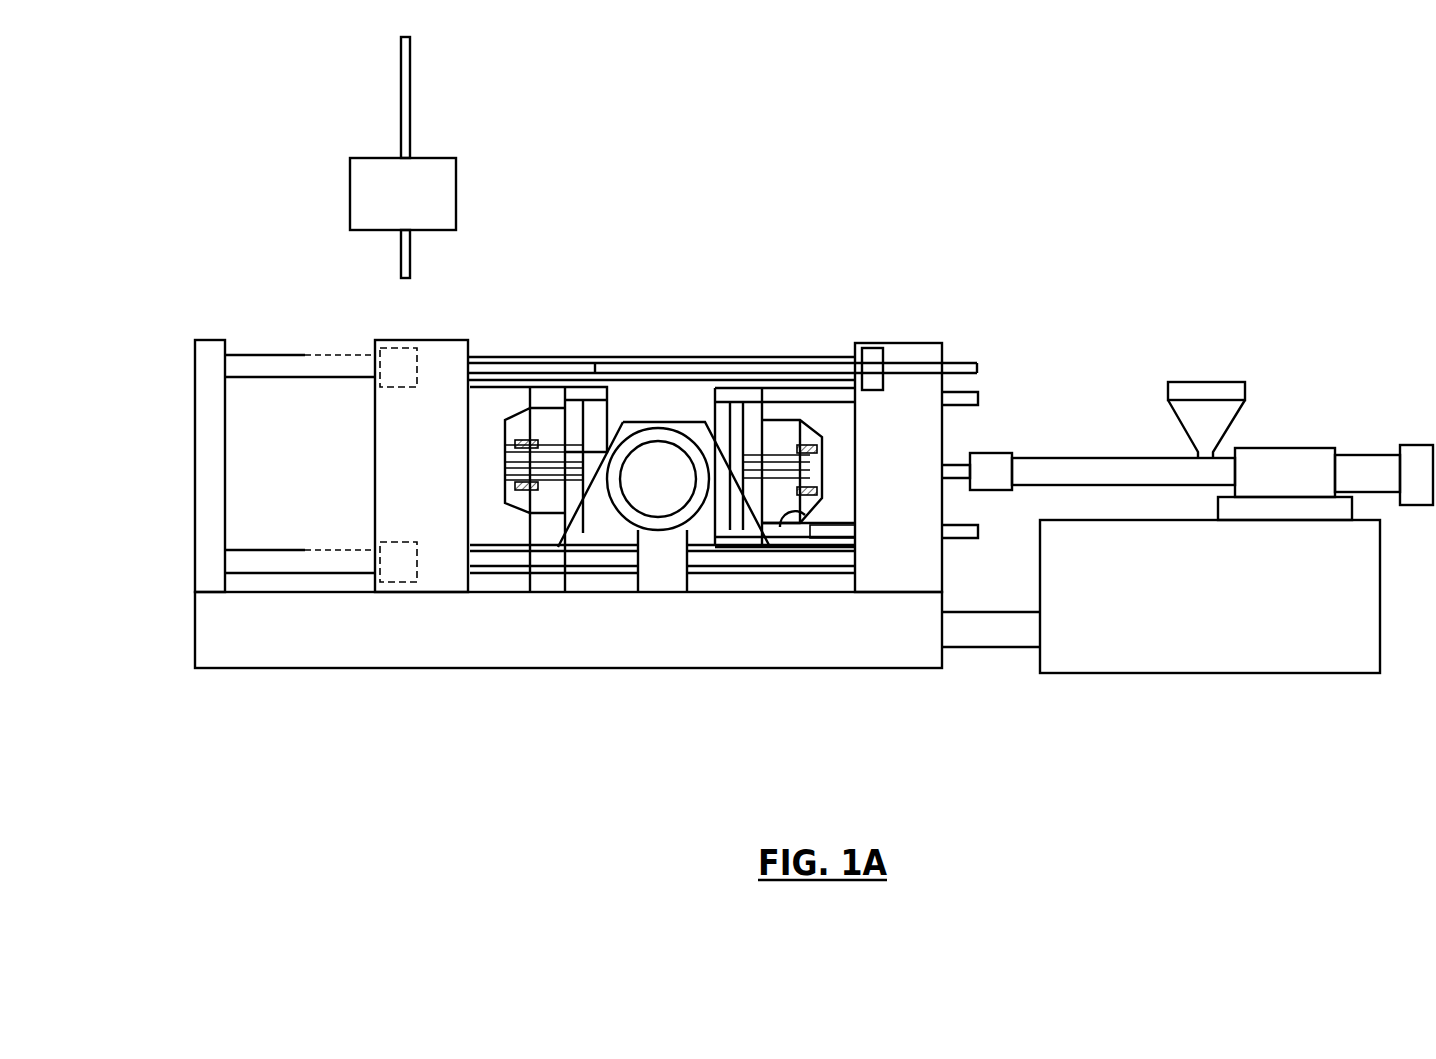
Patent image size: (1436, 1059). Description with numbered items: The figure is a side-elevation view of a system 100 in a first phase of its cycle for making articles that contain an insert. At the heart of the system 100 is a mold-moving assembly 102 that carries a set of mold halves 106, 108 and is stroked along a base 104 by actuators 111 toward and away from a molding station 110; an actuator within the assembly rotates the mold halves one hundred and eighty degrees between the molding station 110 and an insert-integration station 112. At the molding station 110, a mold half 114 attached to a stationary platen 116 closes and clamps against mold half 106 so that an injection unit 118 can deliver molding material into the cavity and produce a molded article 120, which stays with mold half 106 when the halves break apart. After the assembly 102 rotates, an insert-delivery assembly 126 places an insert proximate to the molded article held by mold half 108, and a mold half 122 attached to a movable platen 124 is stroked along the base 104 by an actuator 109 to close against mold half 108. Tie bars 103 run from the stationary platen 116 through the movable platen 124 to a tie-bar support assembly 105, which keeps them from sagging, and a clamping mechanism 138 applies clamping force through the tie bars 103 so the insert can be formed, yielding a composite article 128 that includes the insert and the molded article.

The system 100 is at (1207, 298).
The mold-moving assembly 102 is at (652, 460).
The tie bars 103 is at (272, 365).
The base 104 is at (215, 622).
The tie-bar support assembly 105 is at (207, 397).
The mold half 106 is at (767, 495).
The mold half 108 is at (542, 530).
The actuator 109 is at (713, 362).
The molding station 110 is at (783, 344).
The actuators 111 is at (907, 360).
The insert-integration station 112 is at (532, 348).
The mold half 114 is at (833, 512).
The stationary platen 116 is at (937, 353).
The injection unit 118 is at (1192, 635).
The molded article 120 is at (768, 520).
The mold half 122 is at (493, 528).
The movable platen 124 is at (437, 577).
The insert-delivery assembly 126 is at (373, 183).
The composite article 128 is at (510, 432).
The clamping mechanism 138 is at (390, 572).